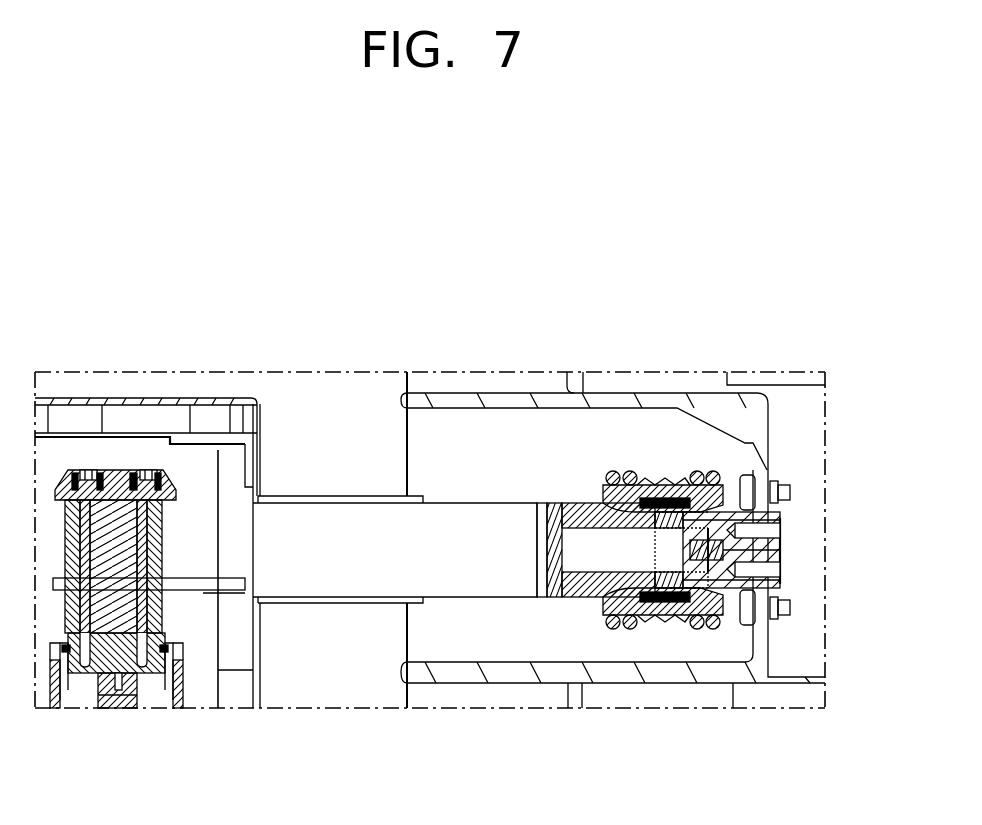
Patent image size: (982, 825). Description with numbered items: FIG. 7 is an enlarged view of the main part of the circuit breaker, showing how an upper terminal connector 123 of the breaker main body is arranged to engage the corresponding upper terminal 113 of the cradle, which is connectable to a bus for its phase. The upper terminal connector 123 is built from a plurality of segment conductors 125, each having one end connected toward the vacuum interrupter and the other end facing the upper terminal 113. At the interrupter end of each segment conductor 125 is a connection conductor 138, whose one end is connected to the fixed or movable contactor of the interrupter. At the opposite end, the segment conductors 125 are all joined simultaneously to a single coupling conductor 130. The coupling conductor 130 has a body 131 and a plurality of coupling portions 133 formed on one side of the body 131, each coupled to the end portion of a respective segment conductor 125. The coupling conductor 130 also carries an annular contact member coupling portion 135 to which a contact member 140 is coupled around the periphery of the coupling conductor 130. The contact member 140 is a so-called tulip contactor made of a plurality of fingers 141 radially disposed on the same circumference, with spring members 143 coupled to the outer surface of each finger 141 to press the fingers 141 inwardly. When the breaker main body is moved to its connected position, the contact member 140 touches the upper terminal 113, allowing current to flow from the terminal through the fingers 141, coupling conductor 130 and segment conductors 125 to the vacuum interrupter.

The upper terminal 113 is at (780, 546).
The upper terminal connector 123 is at (607, 257).
The segment conductor 125 is at (367, 527).
The coupling conductor 130 is at (652, 302).
The body 131 is at (555, 507).
The coupling portion 133 is at (541, 528).
The contact member coupling portion 135 is at (592, 512).
The connection conductor 138 is at (248, 540).
The contact member 140 is at (660, 302).
The finger 141 is at (667, 472).
The spring member 143 is at (698, 472).